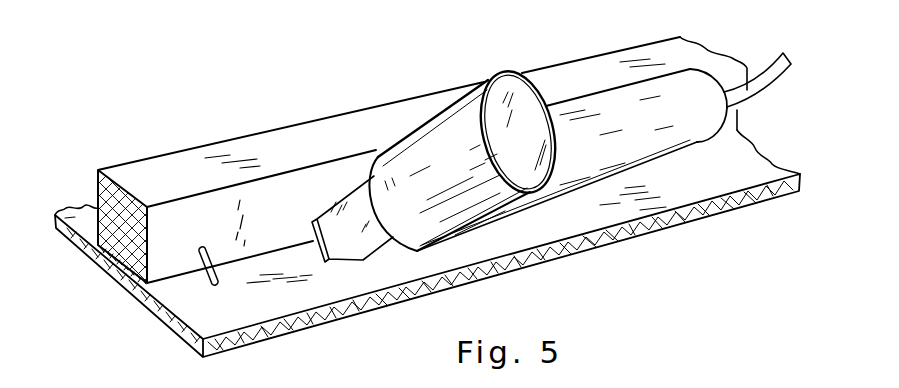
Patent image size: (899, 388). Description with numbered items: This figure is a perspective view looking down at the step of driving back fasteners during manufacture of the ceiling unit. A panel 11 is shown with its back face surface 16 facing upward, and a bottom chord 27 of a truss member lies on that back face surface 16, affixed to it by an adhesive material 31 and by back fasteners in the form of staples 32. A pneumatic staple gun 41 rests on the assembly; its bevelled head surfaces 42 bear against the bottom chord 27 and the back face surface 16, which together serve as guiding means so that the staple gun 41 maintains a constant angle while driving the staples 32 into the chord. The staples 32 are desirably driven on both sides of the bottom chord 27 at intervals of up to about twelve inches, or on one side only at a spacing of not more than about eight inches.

The panel 11 is at (716, 176).
The back face surface 16 is at (253, 308).
The bottom chord 27 is at (192, 167).
The adhesive material 31 is at (101, 251).
The staple 32 is at (210, 284).
The pneumatic staple gun 41 is at (612, 130).
The bevelled head surface 42 is at (353, 328).